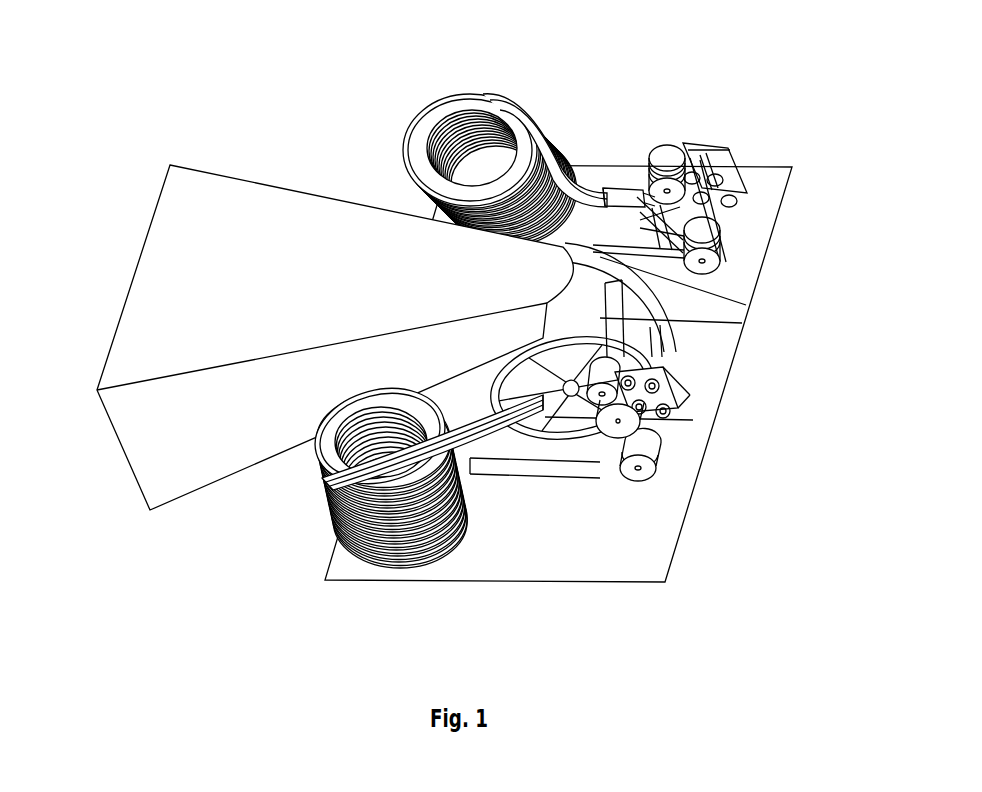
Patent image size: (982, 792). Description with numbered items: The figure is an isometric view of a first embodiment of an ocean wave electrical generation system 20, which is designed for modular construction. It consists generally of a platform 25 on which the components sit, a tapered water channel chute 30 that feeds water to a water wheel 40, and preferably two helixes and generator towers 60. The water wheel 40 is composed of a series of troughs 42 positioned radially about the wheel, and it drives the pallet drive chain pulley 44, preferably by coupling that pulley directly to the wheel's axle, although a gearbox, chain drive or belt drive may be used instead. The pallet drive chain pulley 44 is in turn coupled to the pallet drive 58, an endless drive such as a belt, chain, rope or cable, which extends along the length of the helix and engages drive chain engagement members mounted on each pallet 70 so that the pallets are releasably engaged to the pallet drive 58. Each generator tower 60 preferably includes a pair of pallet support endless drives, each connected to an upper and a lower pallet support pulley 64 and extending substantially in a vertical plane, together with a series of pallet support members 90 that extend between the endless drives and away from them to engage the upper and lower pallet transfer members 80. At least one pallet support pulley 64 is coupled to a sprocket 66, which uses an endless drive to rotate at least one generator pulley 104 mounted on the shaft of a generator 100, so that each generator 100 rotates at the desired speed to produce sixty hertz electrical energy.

The ocean wave electrical generation system 20 is at (265, 102).
The platform 25 is at (393, 580).
The tapered water channel chute 30 is at (168, 163).
The water wheel 40 is at (633, 332).
The troughs 42 is at (673, 336).
The pallet drive chain pulley 44 is at (824, 318).
The pallet drive 58 is at (535, 118).
The generator tower 60 is at (733, 447).
The pallet support pulley 64 is at (658, 185).
The sprocket 66 is at (632, 427).
The pallet 70 is at (637, 223).
The pallet transfer members 80 is at (630, 191).
The pallet support member 90 is at (572, 448).
The generator 100 is at (723, 207).
The generator pulley 104 is at (655, 380).